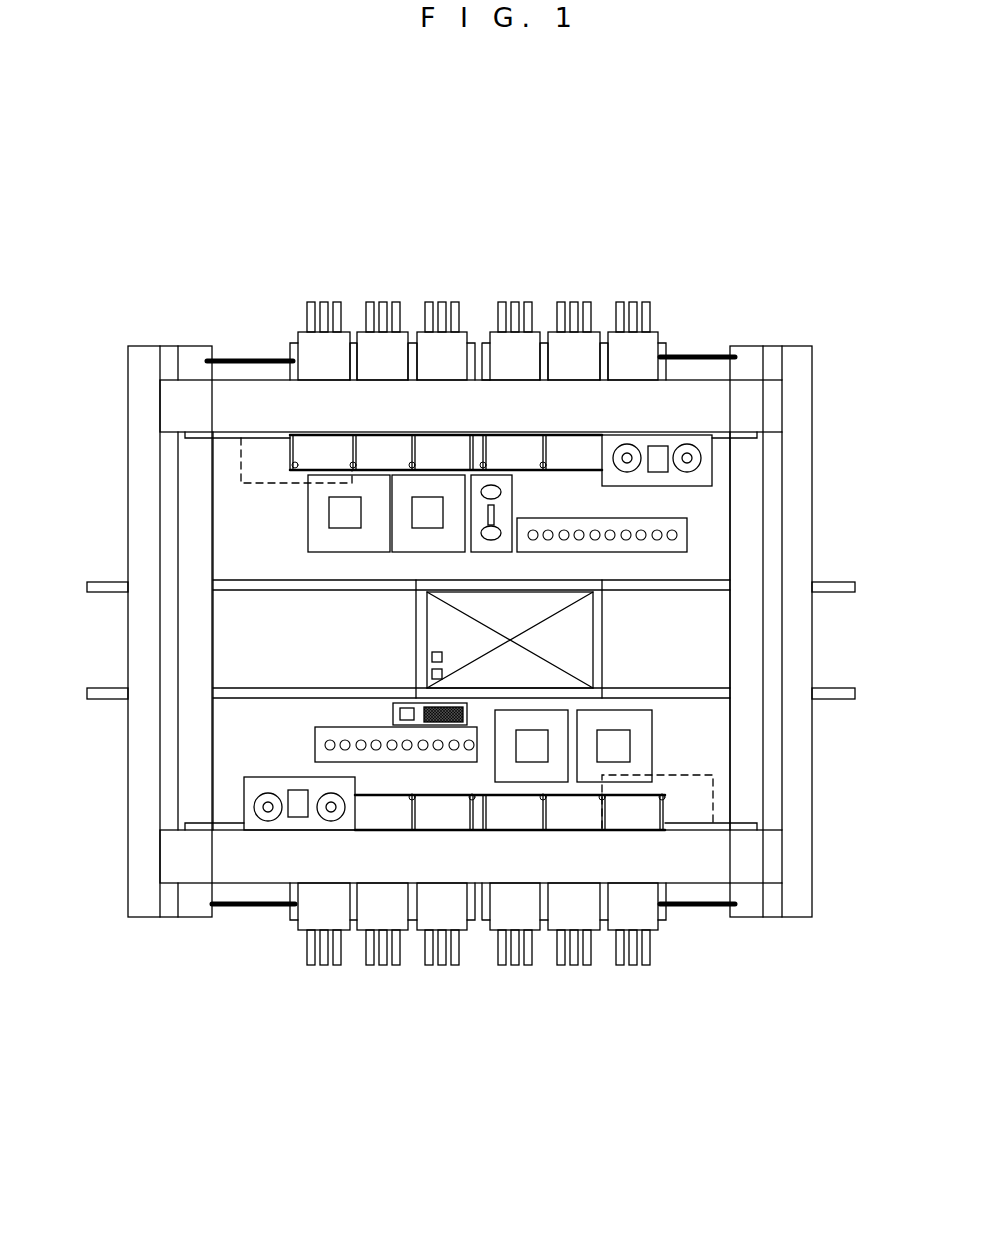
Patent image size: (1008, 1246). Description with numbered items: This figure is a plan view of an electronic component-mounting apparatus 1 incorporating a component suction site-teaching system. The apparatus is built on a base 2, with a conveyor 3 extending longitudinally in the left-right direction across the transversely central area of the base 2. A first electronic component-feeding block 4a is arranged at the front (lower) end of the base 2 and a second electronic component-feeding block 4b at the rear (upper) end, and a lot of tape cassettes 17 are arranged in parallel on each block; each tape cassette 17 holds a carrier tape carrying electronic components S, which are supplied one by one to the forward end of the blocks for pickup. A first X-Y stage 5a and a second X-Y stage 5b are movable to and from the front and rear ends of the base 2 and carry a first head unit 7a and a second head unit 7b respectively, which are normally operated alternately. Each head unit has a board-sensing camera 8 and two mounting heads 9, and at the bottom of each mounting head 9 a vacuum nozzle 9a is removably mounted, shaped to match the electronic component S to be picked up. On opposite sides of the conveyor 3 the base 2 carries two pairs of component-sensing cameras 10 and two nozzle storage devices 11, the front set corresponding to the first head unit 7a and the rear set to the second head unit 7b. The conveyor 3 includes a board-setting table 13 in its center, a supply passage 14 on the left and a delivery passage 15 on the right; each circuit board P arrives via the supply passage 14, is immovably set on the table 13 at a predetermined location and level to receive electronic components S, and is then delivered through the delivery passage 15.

The electronic component-mounting apparatus 1 is at (653, 172).
The base 2 is at (713, 552).
The conveyor 3 is at (715, 576).
The first electronic component-feeding block 4a is at (520, 985).
The second electronic component-feeding block 4b is at (441, 262).
The first X-Y stage 5a is at (233, 890).
The second X-Y stage 5b is at (700, 372).
The first head unit 7a is at (292, 826).
The second head unit 7b is at (713, 462).
The board-sensing camera 8 is at (658, 446).
The mounting head 9 is at (618, 447).
The vacuum nozzle 9a is at (627, 458).
The component-sensing camera 10 is at (422, 522).
The nozzle storage device 11 is at (688, 538).
The board-setting table 13 is at (605, 662).
The supply passage 14 is at (120, 640).
The delivery passage 15 is at (832, 638).
The tape cassette 17 is at (362, 300).
The circuit board P is at (592, 610).
The electronic component S is at (432, 674).